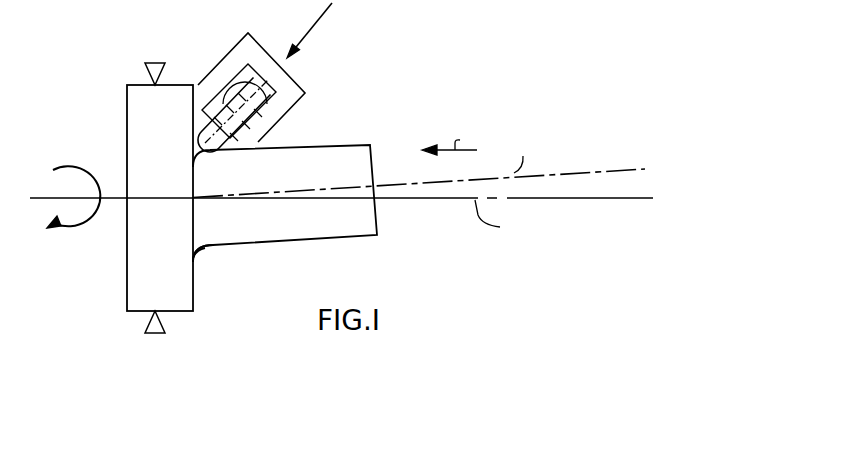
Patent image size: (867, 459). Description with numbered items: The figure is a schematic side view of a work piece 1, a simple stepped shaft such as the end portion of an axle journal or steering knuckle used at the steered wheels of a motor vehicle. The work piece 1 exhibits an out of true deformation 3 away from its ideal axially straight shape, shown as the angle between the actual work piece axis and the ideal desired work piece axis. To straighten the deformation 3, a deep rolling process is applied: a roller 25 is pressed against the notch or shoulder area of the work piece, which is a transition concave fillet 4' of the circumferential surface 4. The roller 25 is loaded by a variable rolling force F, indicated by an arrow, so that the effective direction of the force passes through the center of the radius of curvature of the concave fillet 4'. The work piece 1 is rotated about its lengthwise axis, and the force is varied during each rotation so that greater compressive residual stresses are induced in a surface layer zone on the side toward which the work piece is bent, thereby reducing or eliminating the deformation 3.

The work piece 1 is at (143, 267).
The out of true deformation 3 is at (627, 188).
The circumferential surface 4 is at (219, 255).
The transition concave fillet 4' is at (214, 307).
The roller 25 is at (262, 103).